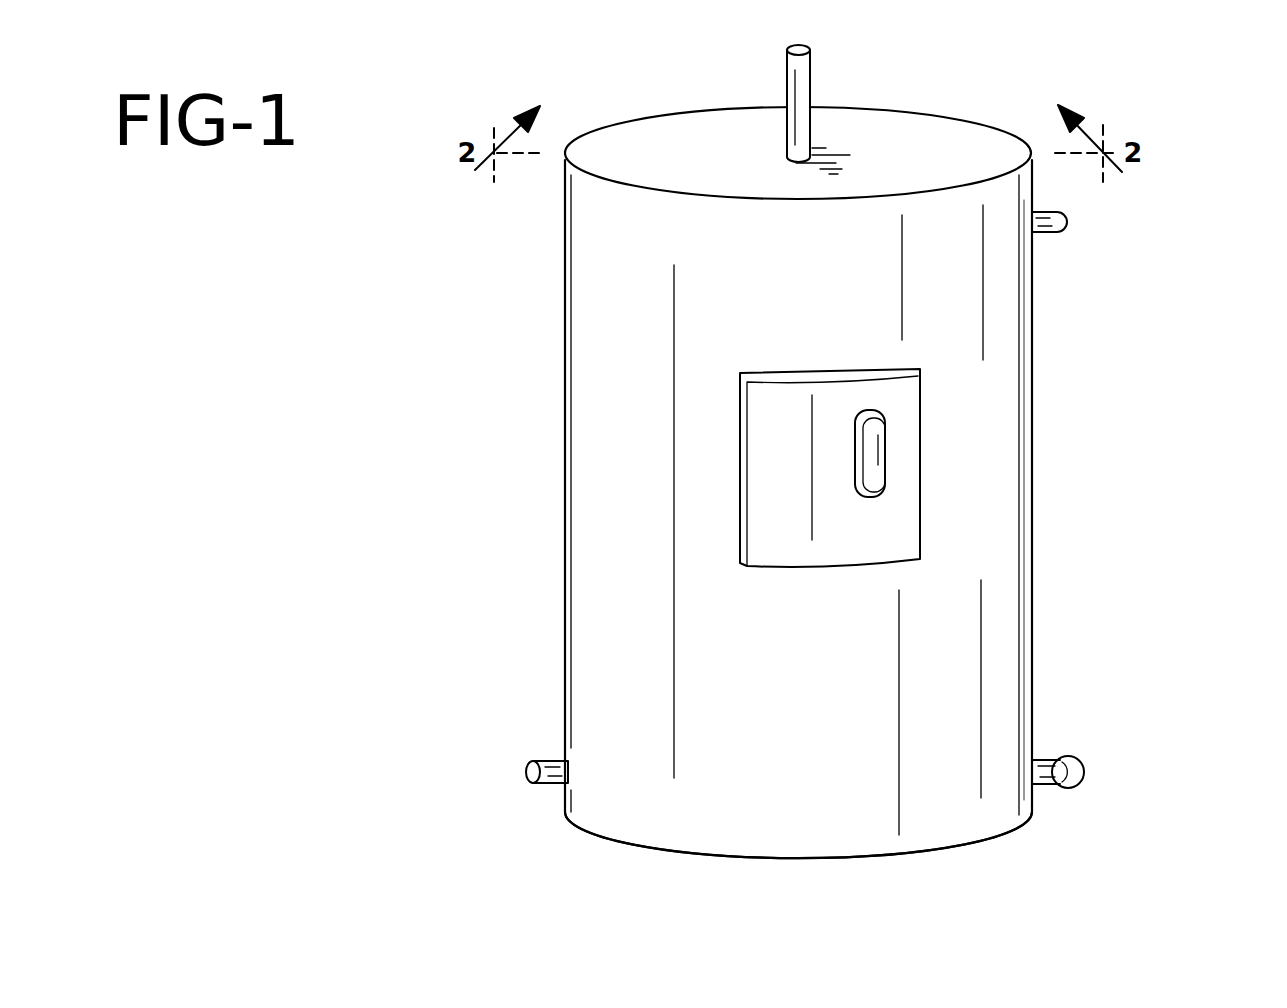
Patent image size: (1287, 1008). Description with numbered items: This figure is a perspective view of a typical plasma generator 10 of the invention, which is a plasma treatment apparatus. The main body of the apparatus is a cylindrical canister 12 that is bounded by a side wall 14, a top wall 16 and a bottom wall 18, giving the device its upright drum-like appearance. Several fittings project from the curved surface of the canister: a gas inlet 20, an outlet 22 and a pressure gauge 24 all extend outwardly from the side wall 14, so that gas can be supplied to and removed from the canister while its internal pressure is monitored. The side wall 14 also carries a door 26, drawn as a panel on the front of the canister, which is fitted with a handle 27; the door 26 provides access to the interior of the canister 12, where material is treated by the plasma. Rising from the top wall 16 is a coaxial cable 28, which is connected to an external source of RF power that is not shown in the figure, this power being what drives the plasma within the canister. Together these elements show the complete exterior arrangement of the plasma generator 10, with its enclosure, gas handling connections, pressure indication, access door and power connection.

The plasma generator 10 is at (1093, 343).
The cylindrical canister 12 is at (972, 490).
The side wall 14 is at (1032, 582).
The top wall 16 is at (718, 135).
The bottom wall 18 is at (925, 853).
The gas inlet 20 is at (1068, 222).
The outlet 22 is at (526, 772).
The pressure gauge 24 is at (1083, 768).
The door 26 is at (770, 450).
The handle 27 is at (887, 456).
The coaxial cable 28 is at (798, 90).